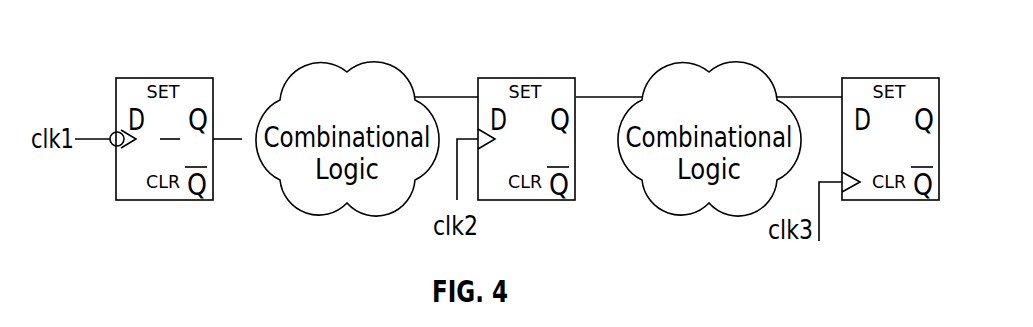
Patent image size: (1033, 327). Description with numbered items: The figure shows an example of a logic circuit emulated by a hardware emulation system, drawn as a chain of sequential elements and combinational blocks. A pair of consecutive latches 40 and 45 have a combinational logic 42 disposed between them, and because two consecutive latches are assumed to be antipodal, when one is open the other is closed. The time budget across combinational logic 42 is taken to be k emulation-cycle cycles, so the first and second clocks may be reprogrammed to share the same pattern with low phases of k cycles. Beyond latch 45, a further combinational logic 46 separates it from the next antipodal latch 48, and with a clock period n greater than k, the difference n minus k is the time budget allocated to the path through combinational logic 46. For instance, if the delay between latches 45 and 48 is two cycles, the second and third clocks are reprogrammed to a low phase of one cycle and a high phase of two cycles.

The latch 40 is at (163, 78).
The combinational logic 42 is at (347, 71).
The latch 45 is at (528, 78).
The combinational logic 46 is at (709, 71).
The latch 48 is at (890, 78).